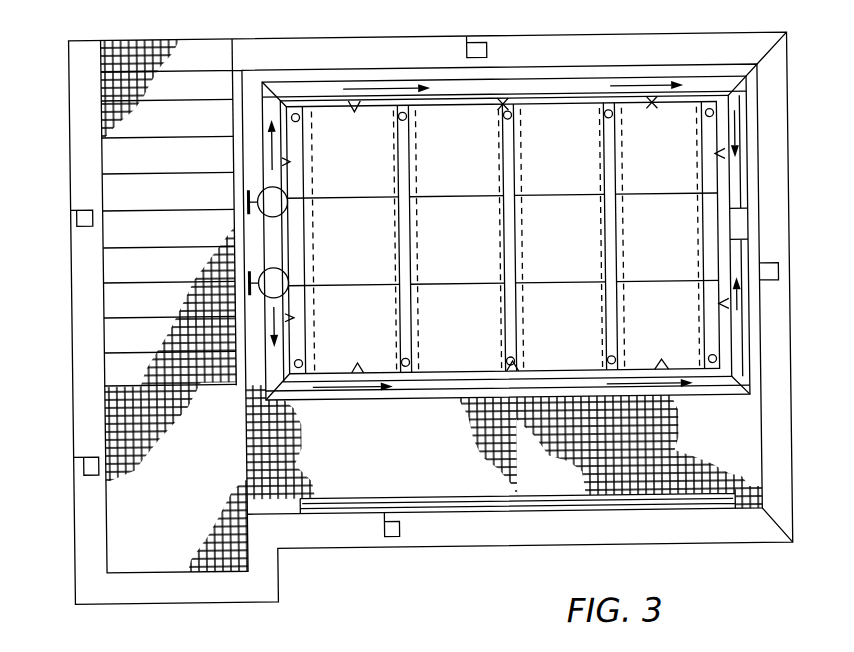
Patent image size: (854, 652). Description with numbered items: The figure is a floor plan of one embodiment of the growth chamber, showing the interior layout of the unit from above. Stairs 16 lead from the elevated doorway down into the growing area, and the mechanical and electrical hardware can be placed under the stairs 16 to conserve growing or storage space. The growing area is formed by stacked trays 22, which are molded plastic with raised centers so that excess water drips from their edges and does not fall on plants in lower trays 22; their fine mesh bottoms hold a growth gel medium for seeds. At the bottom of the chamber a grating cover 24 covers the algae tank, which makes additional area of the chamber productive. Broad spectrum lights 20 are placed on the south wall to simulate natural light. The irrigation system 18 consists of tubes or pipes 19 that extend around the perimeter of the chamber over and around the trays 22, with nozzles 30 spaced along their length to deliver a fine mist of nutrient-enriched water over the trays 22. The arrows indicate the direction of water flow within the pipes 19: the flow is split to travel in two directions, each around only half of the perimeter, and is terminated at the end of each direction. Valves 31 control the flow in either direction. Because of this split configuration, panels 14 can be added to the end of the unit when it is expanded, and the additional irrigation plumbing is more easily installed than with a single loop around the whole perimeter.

The panels 14 is at (778, 492).
The stairs 16 is at (152, 153).
The irrigation system 18 is at (562, 74).
The irrigation pipes 19 is at (334, 86).
The broad spectrum lights 20 is at (527, 500).
The trays 22 is at (737, 228).
The grating cover 24 is at (670, 447).
The nozzles 30 is at (353, 106).
The valves 31 is at (291, 275).